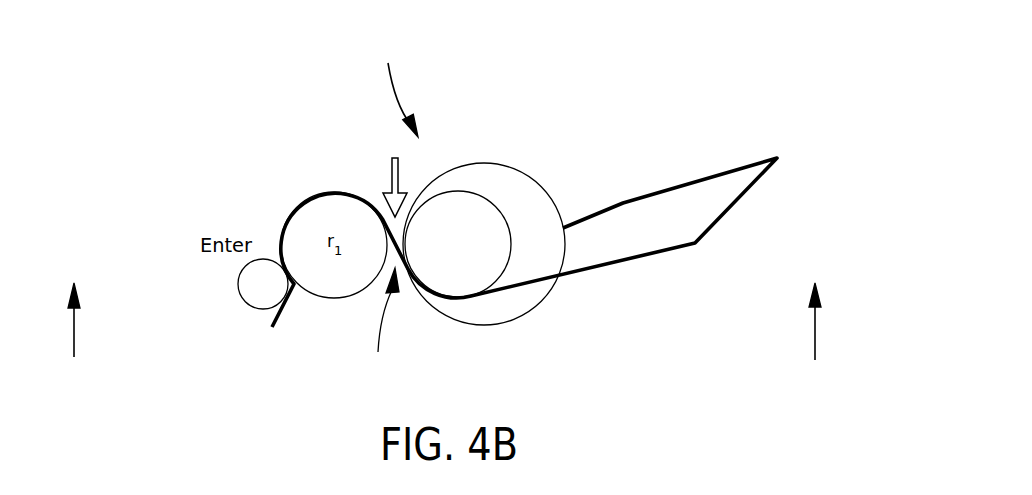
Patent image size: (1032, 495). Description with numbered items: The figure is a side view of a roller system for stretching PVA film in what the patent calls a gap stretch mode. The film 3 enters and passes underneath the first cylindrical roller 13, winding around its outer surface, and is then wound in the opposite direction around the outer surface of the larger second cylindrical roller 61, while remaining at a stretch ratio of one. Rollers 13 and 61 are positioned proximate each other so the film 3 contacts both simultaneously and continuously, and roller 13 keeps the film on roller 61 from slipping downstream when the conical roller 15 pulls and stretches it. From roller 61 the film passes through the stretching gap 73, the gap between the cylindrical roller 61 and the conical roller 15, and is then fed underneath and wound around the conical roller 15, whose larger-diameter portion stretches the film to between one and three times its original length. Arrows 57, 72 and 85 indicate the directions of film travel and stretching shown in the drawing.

The film 3 is at (267, 320).
The first cylindrical roller 13 is at (263, 287).
The conical roller 15 is at (528, 213).
The direction arrow 57 is at (395, 89).
The second cylindrical roller 61 is at (335, 278).
The upward direction arrow 72 is at (74, 335).
The stretching gap 73 is at (390, 163).
The upward direction arrow 85 is at (814, 335).